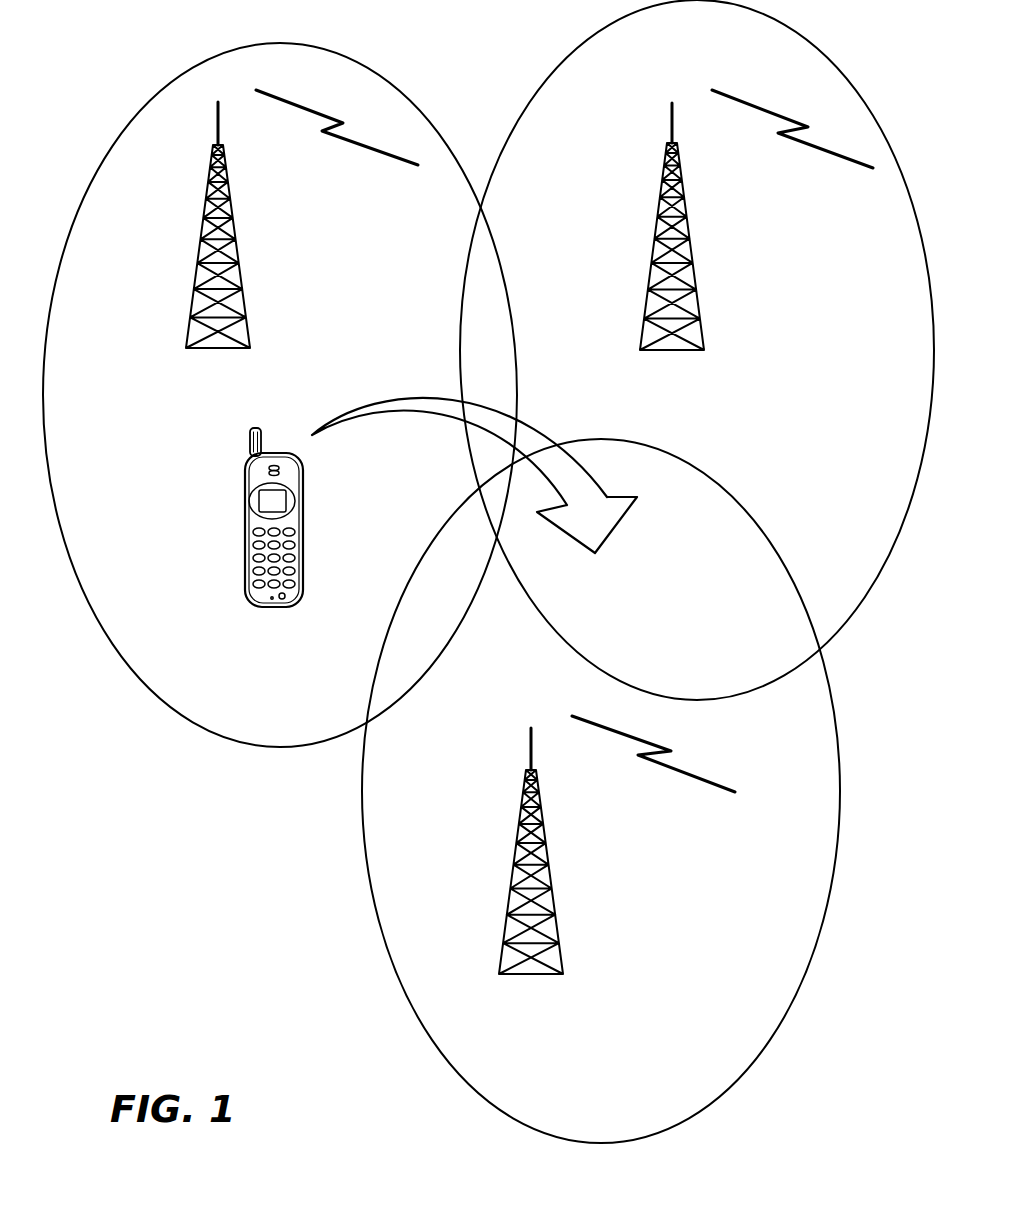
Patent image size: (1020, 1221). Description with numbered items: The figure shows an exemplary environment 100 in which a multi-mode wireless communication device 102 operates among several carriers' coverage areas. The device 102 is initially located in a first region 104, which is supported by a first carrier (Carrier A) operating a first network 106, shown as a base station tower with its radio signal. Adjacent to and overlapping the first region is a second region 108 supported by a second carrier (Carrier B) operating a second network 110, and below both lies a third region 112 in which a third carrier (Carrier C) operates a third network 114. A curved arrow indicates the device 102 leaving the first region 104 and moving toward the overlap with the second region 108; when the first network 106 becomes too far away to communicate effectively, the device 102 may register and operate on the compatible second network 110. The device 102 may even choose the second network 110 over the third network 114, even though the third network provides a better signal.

The wireless communication system 100 is at (229, 1038).
The multi-mode wireless communication device 102 is at (245, 544).
The first region 104 is at (116, 138).
The first network 106 is at (198, 254).
The second region 108 is at (557, 69).
The second network 110 is at (651, 254).
The third cell 112 is at (391, 953).
The third network 114 is at (511, 880).